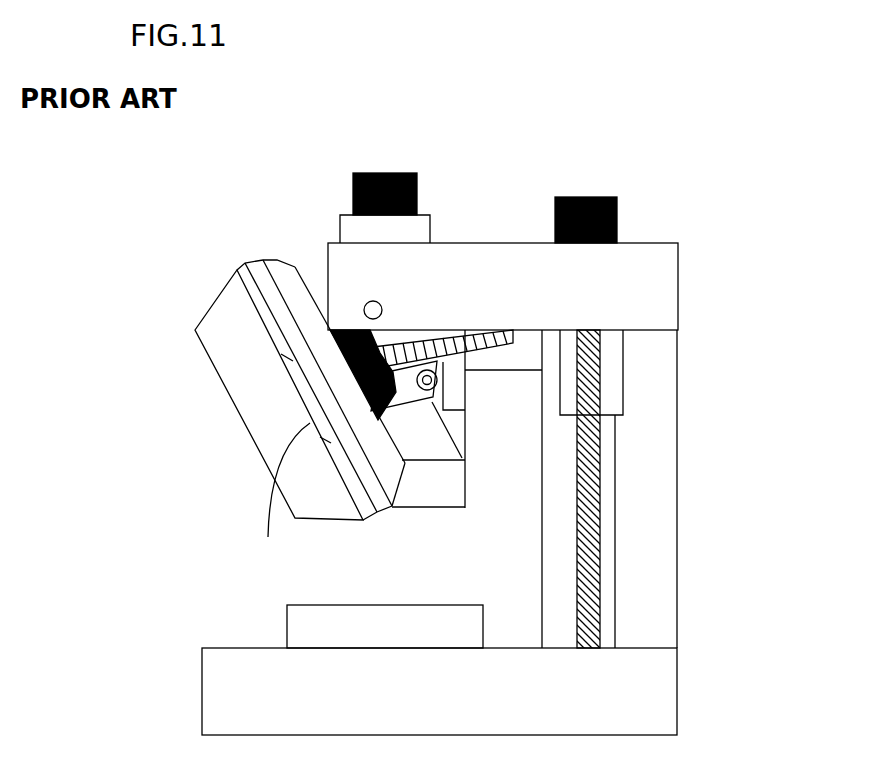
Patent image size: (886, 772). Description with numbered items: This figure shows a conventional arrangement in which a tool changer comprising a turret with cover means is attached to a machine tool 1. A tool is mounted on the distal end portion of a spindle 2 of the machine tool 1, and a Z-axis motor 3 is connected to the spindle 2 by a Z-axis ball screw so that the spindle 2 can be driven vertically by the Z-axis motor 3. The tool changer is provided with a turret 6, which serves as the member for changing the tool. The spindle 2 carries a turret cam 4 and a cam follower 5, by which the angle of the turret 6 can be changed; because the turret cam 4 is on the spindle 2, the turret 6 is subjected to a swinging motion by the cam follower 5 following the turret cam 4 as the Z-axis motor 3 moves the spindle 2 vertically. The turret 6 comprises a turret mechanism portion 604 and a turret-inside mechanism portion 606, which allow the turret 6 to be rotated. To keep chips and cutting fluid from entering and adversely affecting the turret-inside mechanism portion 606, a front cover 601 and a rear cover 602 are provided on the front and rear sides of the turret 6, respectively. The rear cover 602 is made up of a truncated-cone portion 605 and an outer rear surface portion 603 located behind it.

The machine tool 1 is at (712, 474).
The spindle 2 is at (385, 565).
The Z-axis motor 3 is at (500, 178).
The turret cam 4 is at (492, 419).
The cam follower 5 is at (458, 458).
The turret 6 is at (313, 328).
The front cover 601 is at (249, 373).
The rear cover 602 is at (289, 352).
The outer rear surface portion 603 is at (327, 331).
The turret mechanism portion 604 is at (443, 267).
The truncated-cone portion 605 is at (330, 299).
The turret-inside mechanism portion 606 is at (273, 493).